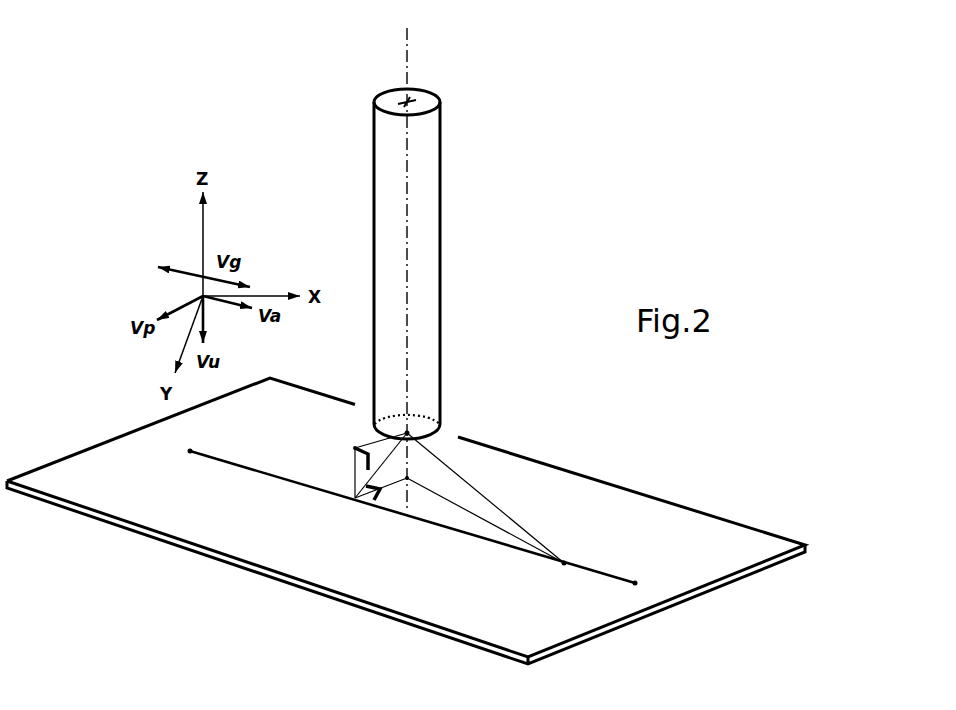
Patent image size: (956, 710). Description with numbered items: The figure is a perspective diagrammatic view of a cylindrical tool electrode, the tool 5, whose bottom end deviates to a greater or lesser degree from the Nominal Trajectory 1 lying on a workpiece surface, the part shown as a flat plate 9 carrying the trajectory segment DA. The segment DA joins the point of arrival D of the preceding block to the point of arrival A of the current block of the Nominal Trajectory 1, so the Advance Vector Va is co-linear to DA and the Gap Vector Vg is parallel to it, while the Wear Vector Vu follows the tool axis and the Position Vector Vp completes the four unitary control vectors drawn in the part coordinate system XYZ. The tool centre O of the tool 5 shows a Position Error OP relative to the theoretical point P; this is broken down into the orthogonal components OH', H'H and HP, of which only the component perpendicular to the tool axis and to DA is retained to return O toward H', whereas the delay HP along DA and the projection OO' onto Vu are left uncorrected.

The nominal trajectory 1 is at (592, 571).
The tool 5 is at (432, 418).
The workpiece plate 9 is at (200, 549).